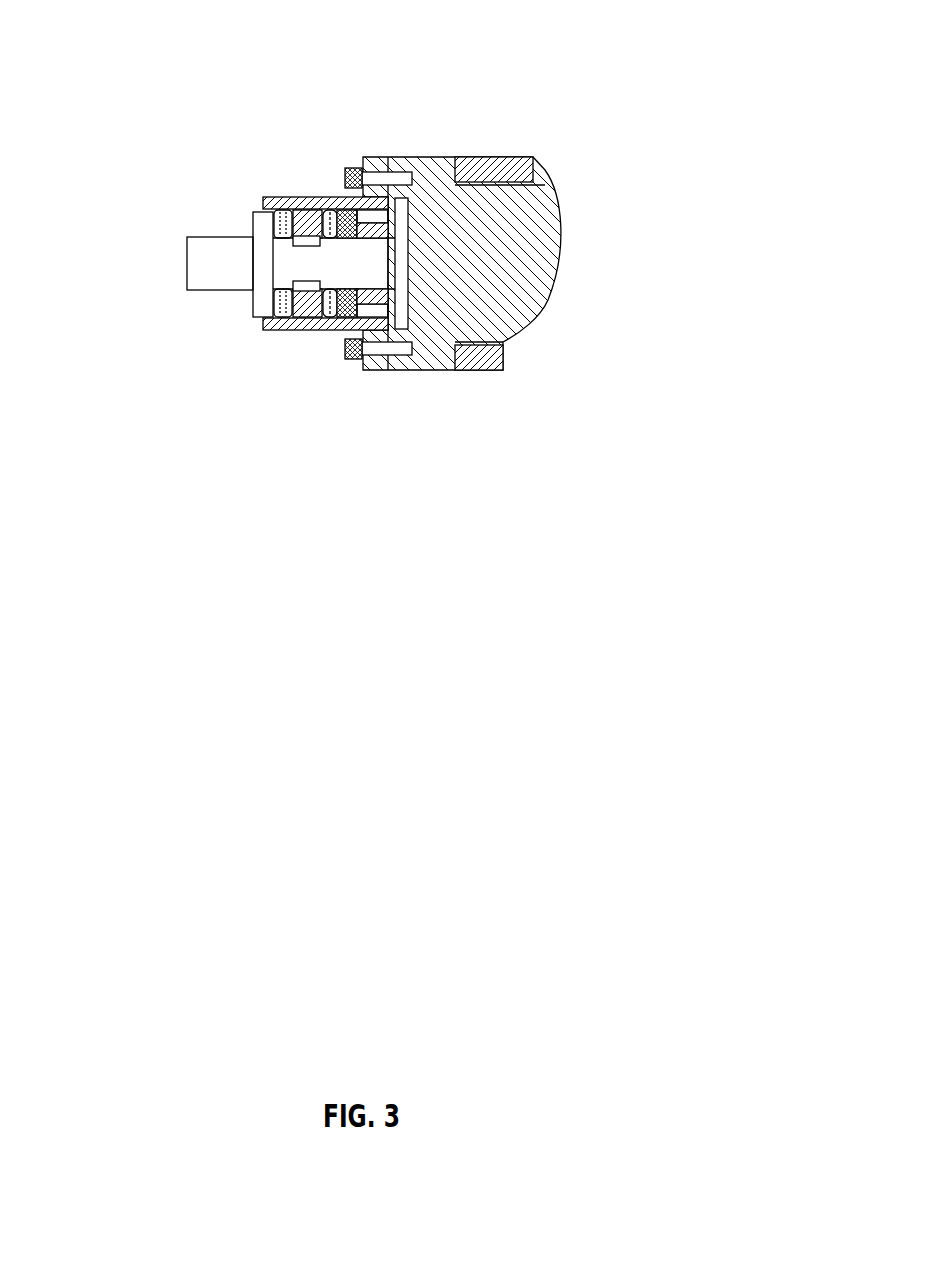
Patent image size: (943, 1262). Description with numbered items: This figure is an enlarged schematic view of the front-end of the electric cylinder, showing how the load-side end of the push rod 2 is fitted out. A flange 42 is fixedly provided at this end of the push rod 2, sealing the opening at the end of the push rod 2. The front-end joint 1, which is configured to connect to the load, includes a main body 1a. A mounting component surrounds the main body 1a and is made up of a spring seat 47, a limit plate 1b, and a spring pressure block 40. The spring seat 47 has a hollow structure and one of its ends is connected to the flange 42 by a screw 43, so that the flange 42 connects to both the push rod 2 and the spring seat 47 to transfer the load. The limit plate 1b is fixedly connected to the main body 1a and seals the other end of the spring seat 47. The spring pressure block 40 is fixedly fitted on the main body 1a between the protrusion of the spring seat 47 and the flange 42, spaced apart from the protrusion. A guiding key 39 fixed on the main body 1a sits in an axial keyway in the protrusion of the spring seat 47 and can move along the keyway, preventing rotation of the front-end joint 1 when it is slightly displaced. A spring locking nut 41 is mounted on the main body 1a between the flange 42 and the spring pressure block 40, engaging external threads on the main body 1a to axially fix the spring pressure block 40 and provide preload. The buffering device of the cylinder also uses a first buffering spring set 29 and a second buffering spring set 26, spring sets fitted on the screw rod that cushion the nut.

The front-end joint 1 is at (187, 237).
The main body 1a is at (252, 317).
The limit plate 1b is at (262, 240).
The push rod 2 is at (540, 167).
The second buffering spring set 26 is at (327, 197).
The first buffering spring set 29 is at (265, 197).
The guiding key 39 is at (310, 330).
The spring pressure block 40 is at (334, 331).
The spring locking nut 41 is at (385, 337).
The flange 42 is at (437, 190).
The screw 43 is at (352, 168).
The spring seat 47 is at (300, 272).